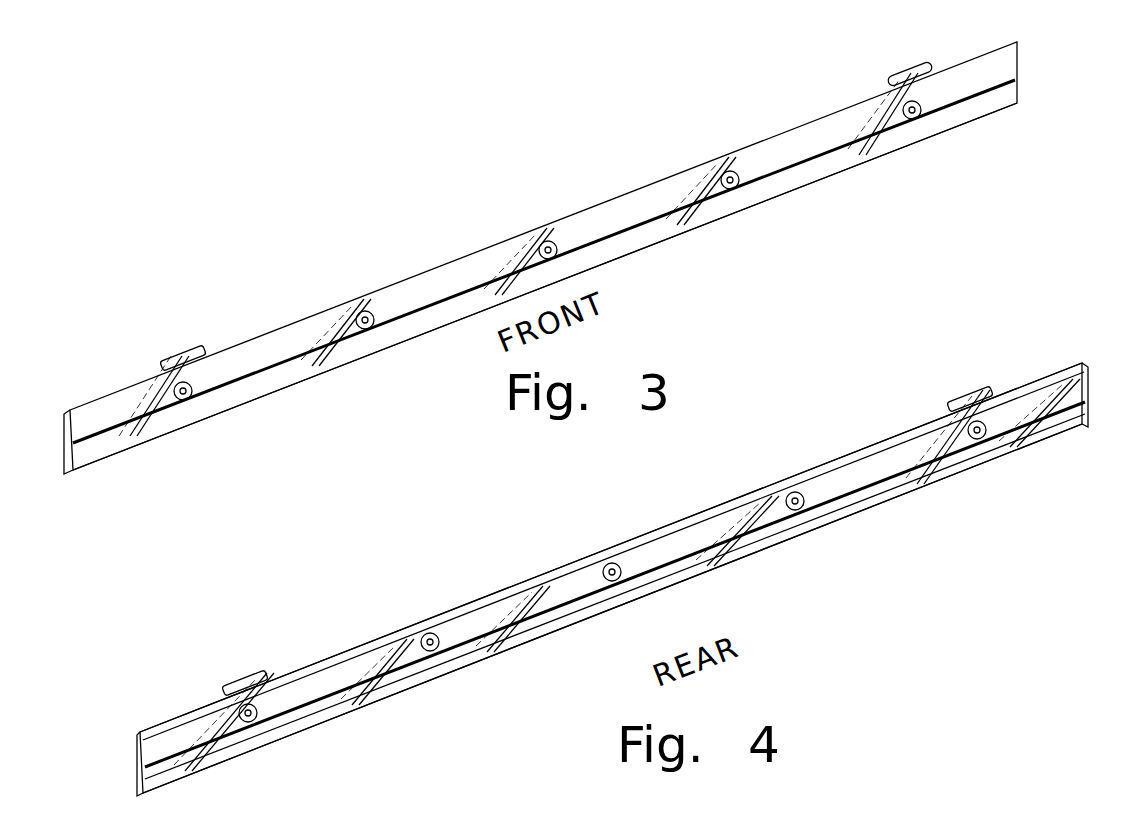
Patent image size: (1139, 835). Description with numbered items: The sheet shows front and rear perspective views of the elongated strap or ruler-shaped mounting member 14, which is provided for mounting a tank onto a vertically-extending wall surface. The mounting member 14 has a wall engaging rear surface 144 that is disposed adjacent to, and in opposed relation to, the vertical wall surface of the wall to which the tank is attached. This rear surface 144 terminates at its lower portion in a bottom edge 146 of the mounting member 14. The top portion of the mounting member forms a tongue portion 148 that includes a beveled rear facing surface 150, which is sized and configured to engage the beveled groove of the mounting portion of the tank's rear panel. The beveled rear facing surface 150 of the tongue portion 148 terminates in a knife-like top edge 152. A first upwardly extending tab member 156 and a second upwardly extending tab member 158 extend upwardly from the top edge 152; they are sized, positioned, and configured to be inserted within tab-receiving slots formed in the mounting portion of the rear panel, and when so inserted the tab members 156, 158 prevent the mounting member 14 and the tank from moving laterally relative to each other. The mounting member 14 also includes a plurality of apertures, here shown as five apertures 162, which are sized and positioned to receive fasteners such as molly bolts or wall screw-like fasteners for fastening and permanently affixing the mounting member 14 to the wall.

In FIG. 3, the mounting member 14 is at (540, 258).
In FIG. 4, the mounting member 14 is at (612, 582).
In FIG. 4, the rear surface 144 is at (308, 718).
In FIG. 4, the bottom edge 146 is at (267, 748).
In FIG. 3, the tongue portion 148 is at (255, 387).
In FIG. 4, the tongue portion 148 is at (555, 553).
In FIG. 4, the beveled rear facing surface 150 is at (462, 630).
In FIG. 4, the top edge 152 is at (337, 650).
In FIG. 3, the first upwardly extending tab member 156 is at (178, 352).
In FIG. 4, the first upwardly extending tab member 156 is at (963, 388).
In FIG. 3, the second upwardly extending tab member 158 is at (913, 68).
In FIG. 4, the second upwardly extending tab member 158 is at (230, 680).
In FIG. 3, the apertures 162 is at (728, 190).
In FIG. 4, the apertures 162 is at (437, 655).